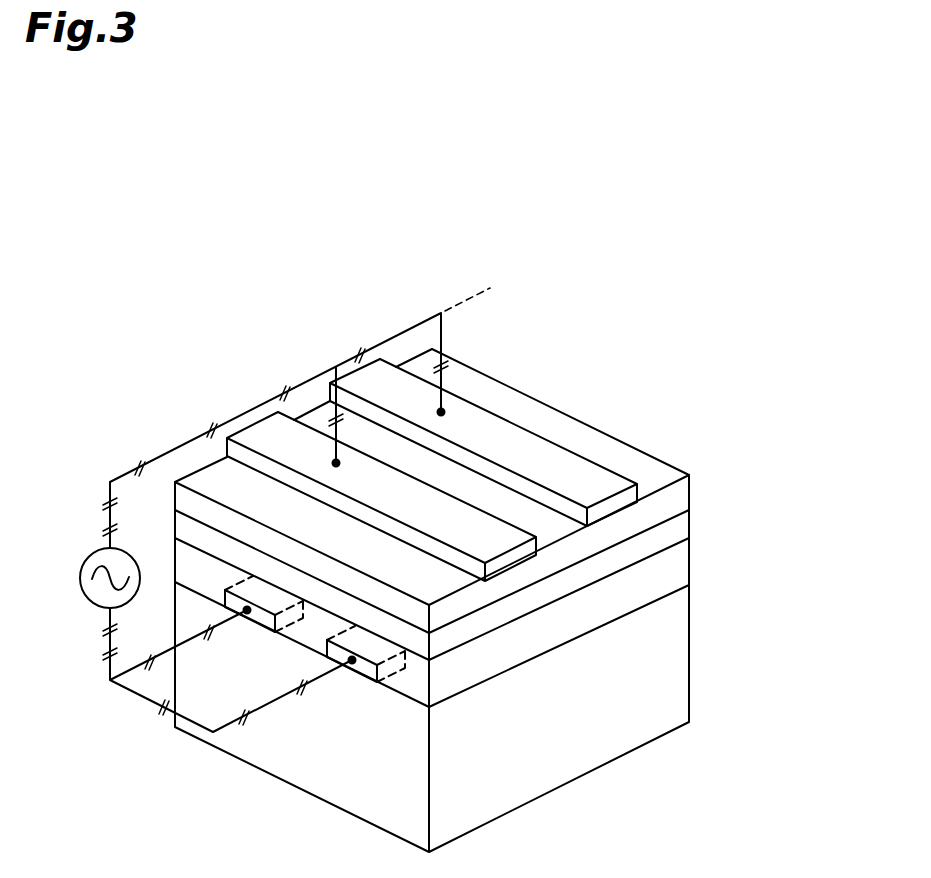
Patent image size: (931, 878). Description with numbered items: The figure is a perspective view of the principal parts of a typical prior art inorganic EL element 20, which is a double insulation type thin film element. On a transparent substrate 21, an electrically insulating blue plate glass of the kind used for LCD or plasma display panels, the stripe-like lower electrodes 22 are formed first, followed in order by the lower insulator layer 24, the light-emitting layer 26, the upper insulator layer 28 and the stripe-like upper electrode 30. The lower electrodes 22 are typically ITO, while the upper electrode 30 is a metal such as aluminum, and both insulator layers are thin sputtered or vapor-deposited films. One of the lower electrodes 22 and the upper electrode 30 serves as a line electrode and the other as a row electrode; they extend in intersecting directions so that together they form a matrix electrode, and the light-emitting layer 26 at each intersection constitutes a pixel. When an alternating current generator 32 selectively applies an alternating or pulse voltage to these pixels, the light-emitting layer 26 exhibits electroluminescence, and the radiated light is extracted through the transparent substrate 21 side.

The EL element 20 is at (638, 298).
The transparent substrate 21 is at (677, 678).
The lower electrodes 22 is at (257, 618).
The lower insulator layer 24 is at (677, 568).
The light-emitting layer 26 is at (677, 536).
The upper insulator layer 28 is at (677, 504).
The upper electrode 30 is at (441, 524).
The alternating current generator 32 is at (89, 554).